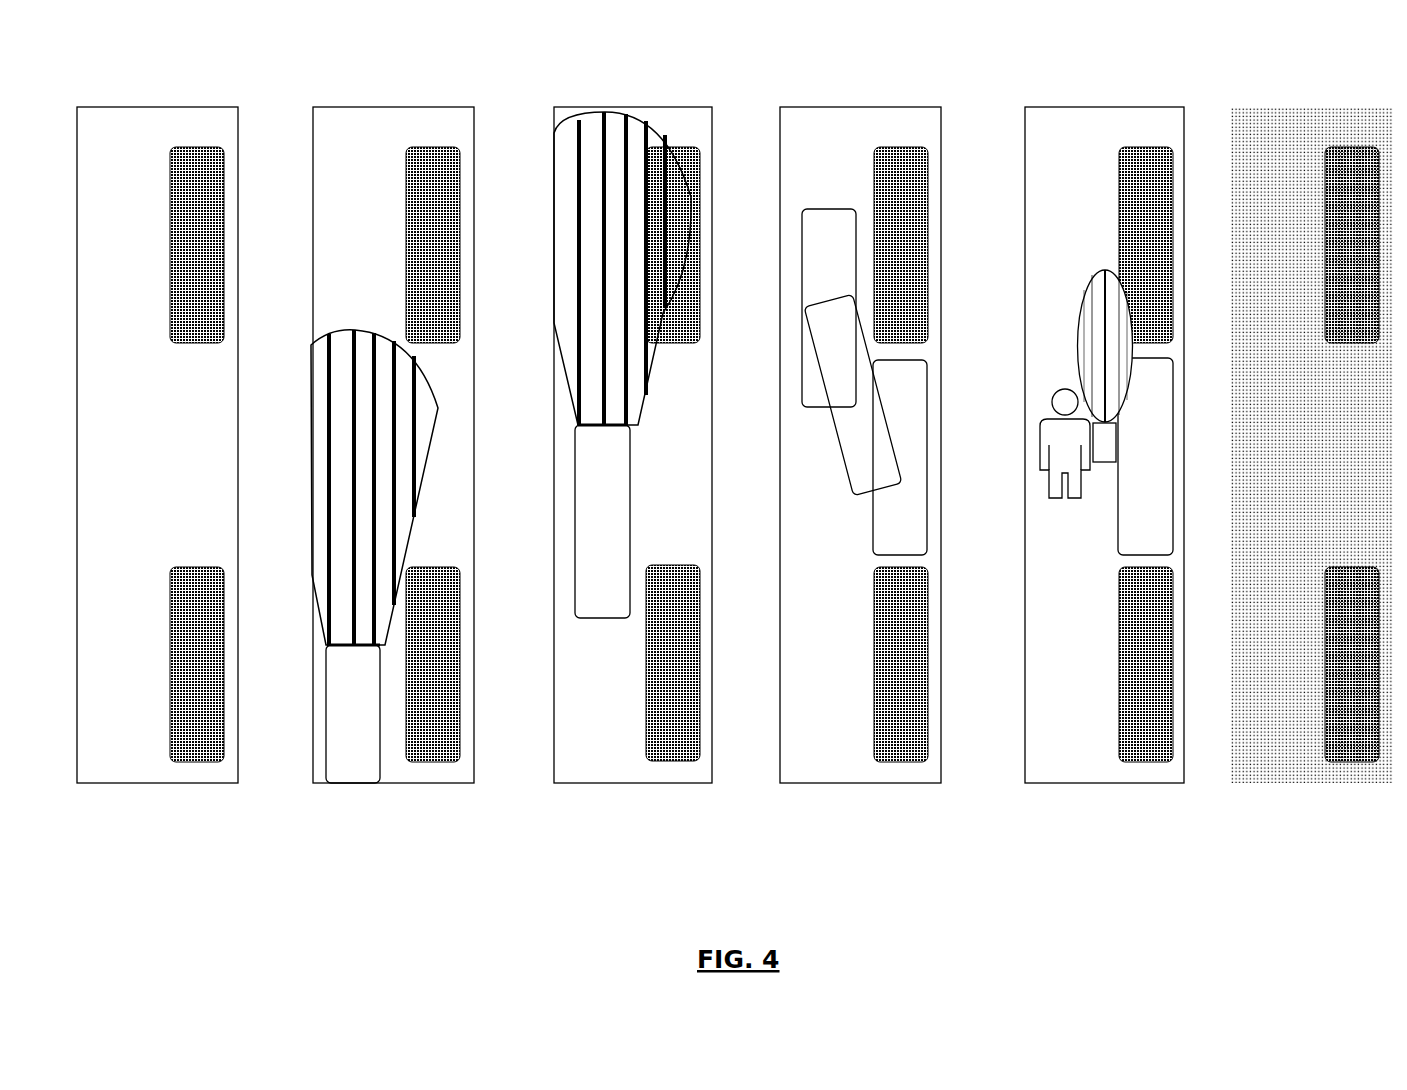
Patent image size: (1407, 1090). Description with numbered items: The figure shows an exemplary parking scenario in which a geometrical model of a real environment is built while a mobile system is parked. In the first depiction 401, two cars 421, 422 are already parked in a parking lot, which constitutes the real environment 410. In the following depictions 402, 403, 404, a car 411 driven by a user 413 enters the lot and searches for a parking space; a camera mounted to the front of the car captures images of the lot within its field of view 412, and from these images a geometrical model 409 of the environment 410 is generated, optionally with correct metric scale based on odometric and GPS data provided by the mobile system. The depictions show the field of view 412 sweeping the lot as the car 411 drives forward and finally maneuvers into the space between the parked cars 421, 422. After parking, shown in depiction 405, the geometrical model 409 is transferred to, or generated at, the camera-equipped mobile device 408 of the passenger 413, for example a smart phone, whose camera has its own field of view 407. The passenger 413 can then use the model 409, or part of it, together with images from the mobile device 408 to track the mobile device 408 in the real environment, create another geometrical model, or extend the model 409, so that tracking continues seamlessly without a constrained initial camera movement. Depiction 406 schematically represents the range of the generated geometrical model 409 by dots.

The depiction 401 is at (157, 465).
The depiction 402 is at (393, 465).
The depiction 403 is at (633, 465).
The depiction 404 is at (860, 465).
The depiction 405 is at (1104, 465).
The depiction 406 is at (1312, 465).
The field of view of the camera attached to the mobile device 407 is at (1105, 348).
The mobile device 408 is at (1105, 443).
The geometrical model 409 is at (1277, 130).
The real environment 410 is at (198, 128).
The car 411 is at (352, 643).
The field of view of mobile system camera 412 is at (352, 483).
The passenger 413 is at (1065, 445).
The car 421 is at (212, 148).
The car 422 is at (218, 763).